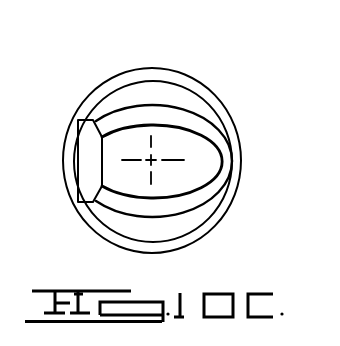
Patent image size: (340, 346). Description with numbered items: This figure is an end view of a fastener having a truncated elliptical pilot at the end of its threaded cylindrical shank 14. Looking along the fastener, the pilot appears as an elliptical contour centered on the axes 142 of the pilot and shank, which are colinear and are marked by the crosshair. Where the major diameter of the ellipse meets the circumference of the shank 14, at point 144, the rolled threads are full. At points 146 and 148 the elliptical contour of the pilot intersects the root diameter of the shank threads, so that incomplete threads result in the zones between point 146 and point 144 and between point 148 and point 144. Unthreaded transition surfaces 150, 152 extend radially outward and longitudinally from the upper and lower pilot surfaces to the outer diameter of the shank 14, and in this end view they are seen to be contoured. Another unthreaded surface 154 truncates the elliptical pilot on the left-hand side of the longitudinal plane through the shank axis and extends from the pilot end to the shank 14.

The cylindrical shank 14 is at (187, 242).
The axes 142 is at (152, 159).
The point 144 is at (242, 163).
The point 146 is at (221, 127).
The point 148 is at (217, 198).
The unthreaded transition surface 150 is at (163, 99).
The unthreaded transition surface 152 is at (192, 217).
The unthreaded surface 154 is at (84, 172).